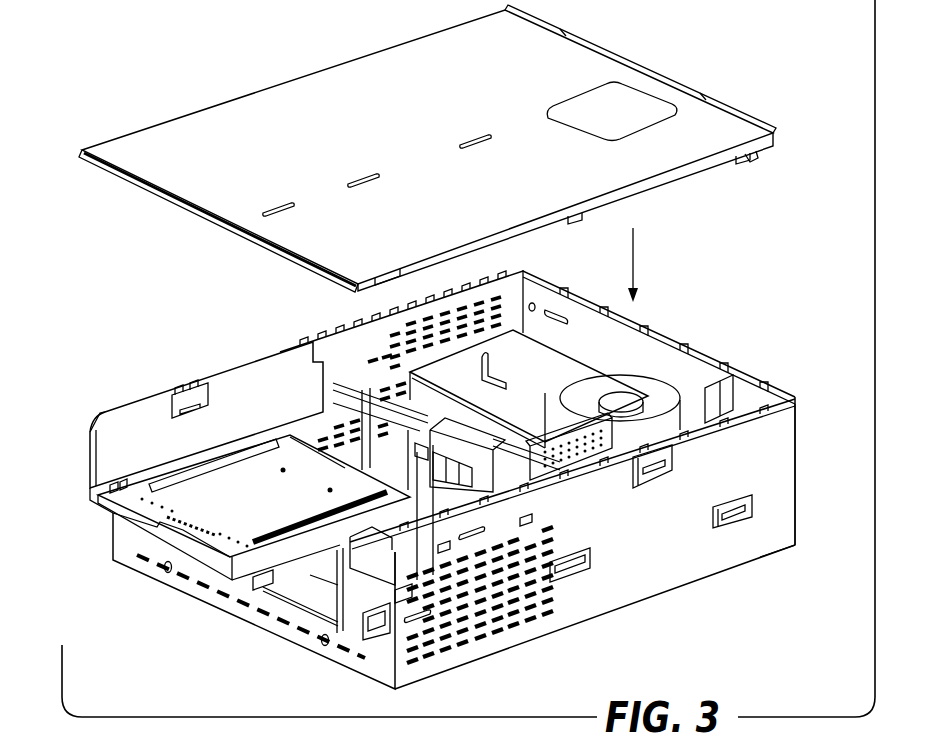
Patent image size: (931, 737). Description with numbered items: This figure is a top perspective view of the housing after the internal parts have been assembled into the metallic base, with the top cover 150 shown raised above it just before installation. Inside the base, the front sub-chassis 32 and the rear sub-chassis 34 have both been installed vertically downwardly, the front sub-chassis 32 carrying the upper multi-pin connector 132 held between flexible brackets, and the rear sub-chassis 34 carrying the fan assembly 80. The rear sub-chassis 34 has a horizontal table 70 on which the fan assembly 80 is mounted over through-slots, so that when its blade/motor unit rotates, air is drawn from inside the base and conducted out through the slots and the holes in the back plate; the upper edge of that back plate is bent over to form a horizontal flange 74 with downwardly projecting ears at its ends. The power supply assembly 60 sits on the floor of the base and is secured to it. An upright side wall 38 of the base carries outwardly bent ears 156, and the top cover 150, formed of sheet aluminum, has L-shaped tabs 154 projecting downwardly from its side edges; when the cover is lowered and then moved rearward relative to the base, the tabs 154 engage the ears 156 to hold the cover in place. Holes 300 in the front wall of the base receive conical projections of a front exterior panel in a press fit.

The top cover 150 is at (621, 57).
The L-shaped tabs 154 is at (756, 162).
The rear sub-chassis 34 is at (628, 315).
The horizontal table 70 is at (556, 372).
The fan assembly 80 is at (670, 381).
The horizontal flange 74 is at (758, 386).
The side wall 38 is at (787, 438).
The power supply assembly 60 is at (636, 437).
The upper multi-pin connector 132 is at (352, 367).
The front sub-chassis 32 is at (95, 512).
The holes 300 is at (165, 575).
The outwardly bent ears 156 is at (423, 543).